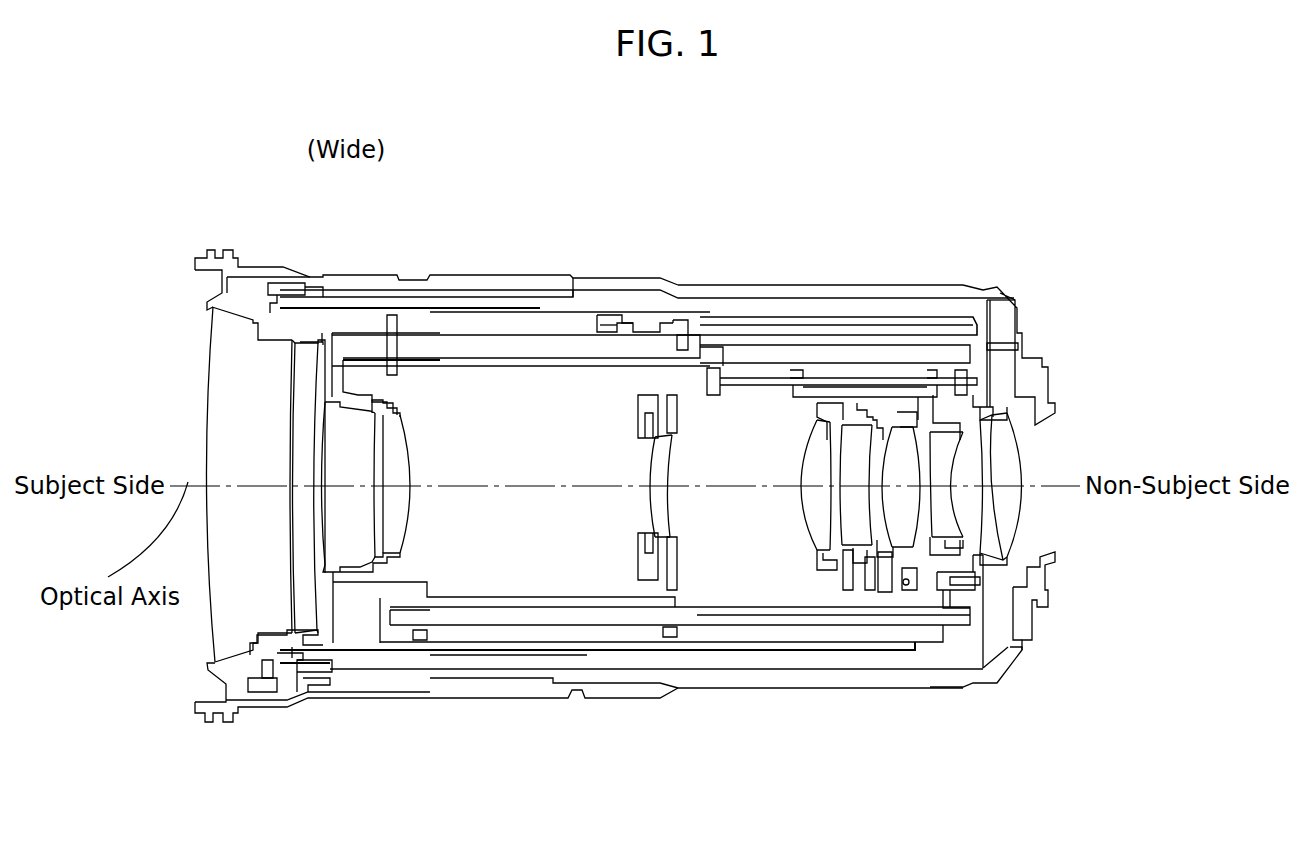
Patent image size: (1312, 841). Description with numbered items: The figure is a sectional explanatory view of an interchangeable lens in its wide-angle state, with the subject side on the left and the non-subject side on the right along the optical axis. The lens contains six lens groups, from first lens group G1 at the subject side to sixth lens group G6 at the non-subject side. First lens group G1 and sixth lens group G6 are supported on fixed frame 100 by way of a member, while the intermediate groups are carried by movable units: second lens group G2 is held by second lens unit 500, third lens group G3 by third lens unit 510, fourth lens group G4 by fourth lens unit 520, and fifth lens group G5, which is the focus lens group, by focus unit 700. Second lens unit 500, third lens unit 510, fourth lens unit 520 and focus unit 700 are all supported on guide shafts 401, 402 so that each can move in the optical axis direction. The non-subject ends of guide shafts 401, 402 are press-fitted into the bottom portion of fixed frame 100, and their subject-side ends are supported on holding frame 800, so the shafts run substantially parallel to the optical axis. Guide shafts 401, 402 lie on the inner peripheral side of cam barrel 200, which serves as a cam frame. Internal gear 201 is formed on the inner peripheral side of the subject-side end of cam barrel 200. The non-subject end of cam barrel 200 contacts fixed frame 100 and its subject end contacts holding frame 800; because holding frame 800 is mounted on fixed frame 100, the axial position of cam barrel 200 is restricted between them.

The fixed frame 100 is at (935, 308).
The cam barrel 200 is at (740, 332).
The internal gear 201 is at (613, 325).
The guide shaft 401 is at (697, 617).
The guide shaft 402 is at (709, 355).
The second lens unit 500 is at (343, 590).
The third lens unit 510 is at (643, 570).
The fourth lens unit 520 is at (828, 558).
The focus unit 700 is at (953, 413).
The holding frame 800 is at (393, 633).
The first lens group G1 is at (307, 408).
The second lens group G2 is at (342, 463).
The third lens group G3 is at (660, 502).
The fourth lens group G4 is at (822, 502).
The fifth lens group G5 is at (942, 530).
The sixth lens group G6 is at (1010, 527).